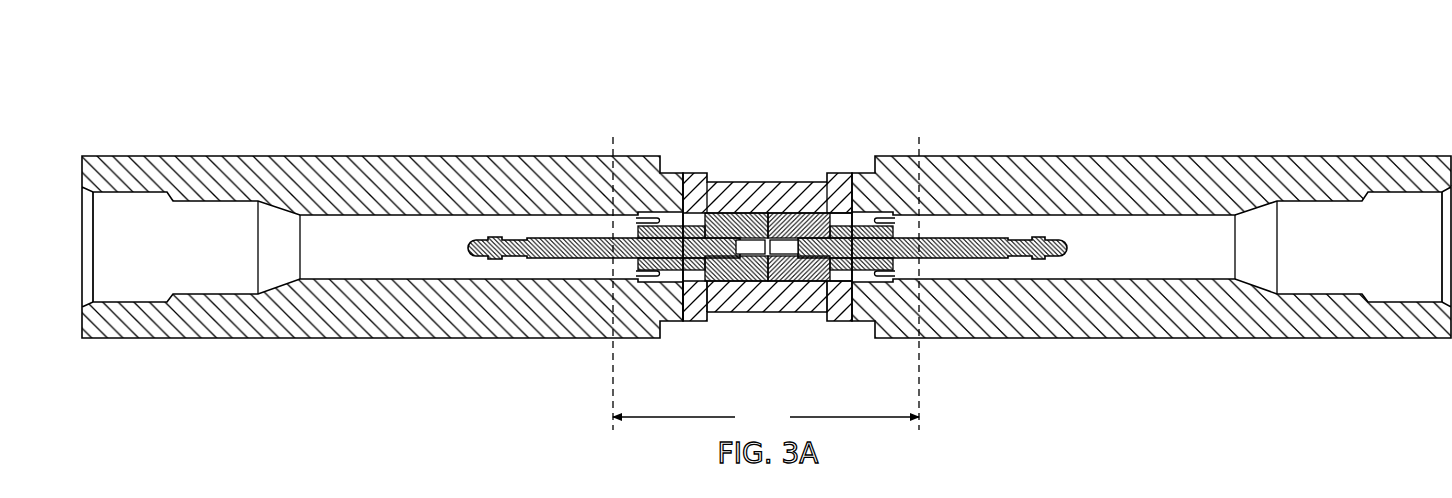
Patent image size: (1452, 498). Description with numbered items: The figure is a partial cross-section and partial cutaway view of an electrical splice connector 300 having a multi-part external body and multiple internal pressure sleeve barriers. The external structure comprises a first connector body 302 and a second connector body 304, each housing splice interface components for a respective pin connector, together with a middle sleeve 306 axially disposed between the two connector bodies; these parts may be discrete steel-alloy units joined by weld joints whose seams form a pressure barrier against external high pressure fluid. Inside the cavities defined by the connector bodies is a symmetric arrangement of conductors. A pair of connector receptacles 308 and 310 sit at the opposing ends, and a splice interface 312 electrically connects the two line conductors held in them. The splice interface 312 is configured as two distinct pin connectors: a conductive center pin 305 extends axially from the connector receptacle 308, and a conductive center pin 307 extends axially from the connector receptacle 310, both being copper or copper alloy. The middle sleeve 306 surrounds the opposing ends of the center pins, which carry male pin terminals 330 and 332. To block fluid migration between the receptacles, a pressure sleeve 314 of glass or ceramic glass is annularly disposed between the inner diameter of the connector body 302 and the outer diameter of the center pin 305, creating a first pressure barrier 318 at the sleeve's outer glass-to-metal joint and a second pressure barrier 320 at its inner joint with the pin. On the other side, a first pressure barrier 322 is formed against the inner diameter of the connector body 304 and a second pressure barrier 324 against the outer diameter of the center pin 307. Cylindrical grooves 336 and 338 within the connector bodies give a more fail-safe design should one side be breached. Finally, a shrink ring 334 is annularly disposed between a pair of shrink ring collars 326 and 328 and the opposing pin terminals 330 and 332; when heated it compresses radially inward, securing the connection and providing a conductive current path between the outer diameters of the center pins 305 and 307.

The electrical splice connector 300 is at (745, 76).
The first connector body 302 is at (427, 172).
The second connector body 304 is at (1110, 172).
The center pin 305 is at (547, 240).
The middle sleeve 306 is at (755, 210).
The center pin 307 is at (987, 240).
The connector receptacle 308 is at (359, 232).
The connector receptacle 310 is at (1175, 232).
The splice interface 312 is at (766, 283).
The pressure sleeve 314 is at (652, 226).
The first pressure barrier 318 is at (698, 272).
The second pressure barrier 320 is at (682, 272).
The first pressure barrier 322 is at (835, 272).
The second pressure barrier 324 is at (850, 272).
The shrink ring collar 326 is at (713, 226).
The shrink ring collar 328 is at (818, 212).
The male pin terminal 330 is at (750, 258).
The male pin terminal 332 is at (790, 258).
The shrink ring 334 is at (788, 226).
The cylindrical groove 336 is at (652, 219).
The cylindrical groove 338 is at (883, 219).